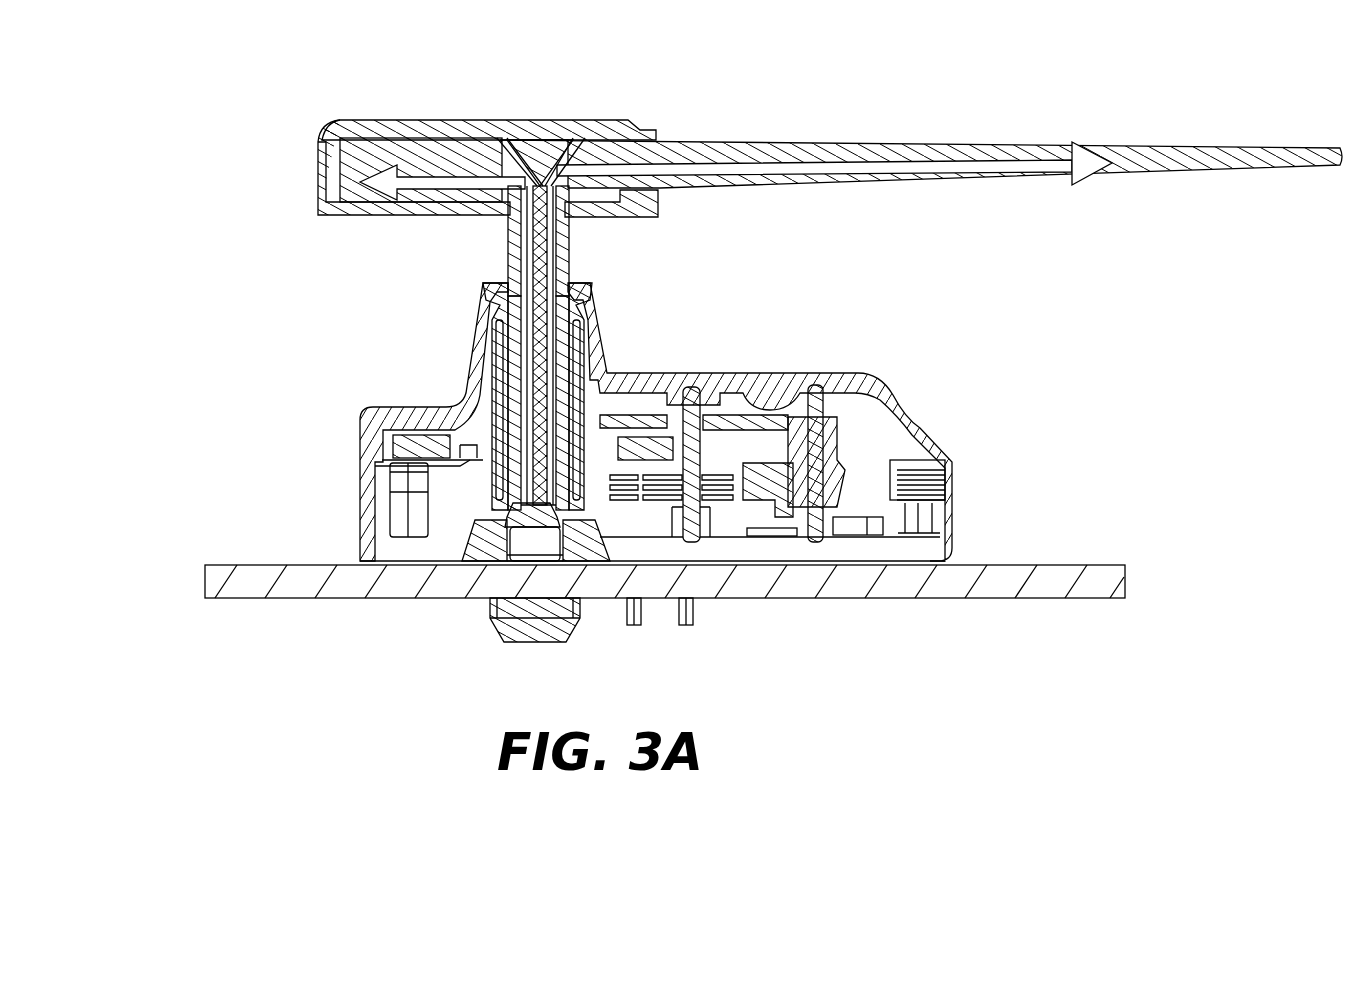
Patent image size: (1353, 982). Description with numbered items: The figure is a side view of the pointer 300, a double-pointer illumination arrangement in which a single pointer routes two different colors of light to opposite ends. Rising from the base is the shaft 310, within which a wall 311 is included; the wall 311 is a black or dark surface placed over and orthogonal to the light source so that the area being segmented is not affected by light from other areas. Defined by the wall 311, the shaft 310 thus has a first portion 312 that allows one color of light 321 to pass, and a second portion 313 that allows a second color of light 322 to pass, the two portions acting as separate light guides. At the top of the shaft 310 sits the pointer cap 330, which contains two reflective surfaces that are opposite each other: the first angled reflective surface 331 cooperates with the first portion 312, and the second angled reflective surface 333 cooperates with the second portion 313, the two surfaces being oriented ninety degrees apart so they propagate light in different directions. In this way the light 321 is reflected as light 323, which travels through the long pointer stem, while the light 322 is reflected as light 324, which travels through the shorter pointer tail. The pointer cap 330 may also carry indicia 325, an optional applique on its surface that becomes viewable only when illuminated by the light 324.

The pointer 300 is at (148, 210).
The shaft 310 is at (569, 268).
The wall 311 is at (533, 327).
The first portion 312 is at (547, 374).
The second portion 313 is at (507, 262).
The light 321 is at (555, 236).
The light 322 is at (513, 234).
The light 323 is at (793, 163).
The light 324 is at (418, 158).
The indicia 325 is at (532, 140).
The pointer cap 330 is at (620, 125).
The first angled reflective surface 331 is at (590, 140).
The second angled reflective surface 333 is at (513, 140).